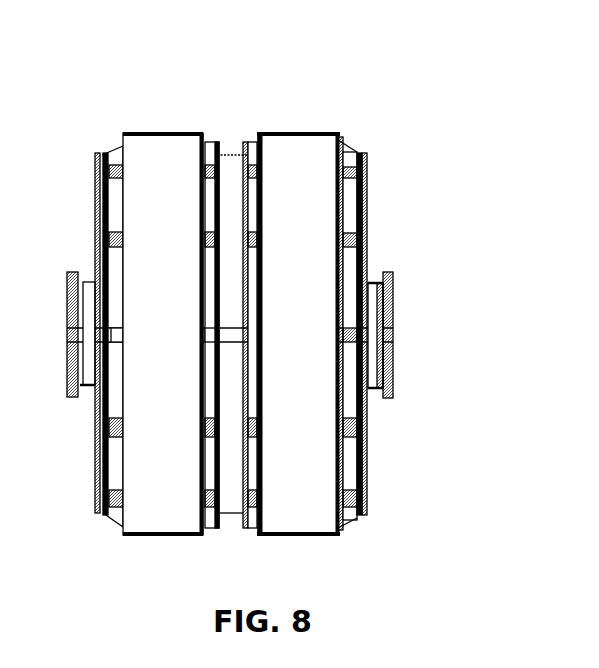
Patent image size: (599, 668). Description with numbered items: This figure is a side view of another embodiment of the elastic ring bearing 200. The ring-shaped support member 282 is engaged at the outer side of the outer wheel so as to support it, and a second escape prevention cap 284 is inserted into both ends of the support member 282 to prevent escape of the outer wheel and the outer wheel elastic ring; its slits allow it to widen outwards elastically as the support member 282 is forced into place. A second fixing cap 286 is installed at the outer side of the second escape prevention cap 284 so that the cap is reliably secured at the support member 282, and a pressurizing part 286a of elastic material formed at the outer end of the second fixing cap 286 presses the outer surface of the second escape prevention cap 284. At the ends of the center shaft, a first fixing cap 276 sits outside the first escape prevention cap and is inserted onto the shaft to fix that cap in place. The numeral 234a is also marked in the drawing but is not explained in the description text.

The elastic ring bearing 200 is at (396, 46).
The shaft 234a is at (207, 140).
The support member 282 is at (223, 155).
The second fixing cap 286 is at (293, 142).
The pressurizing part 286a is at (365, 208).
The second escape prevention cap 284 is at (367, 164).
The first fixing cap 276 is at (395, 338).